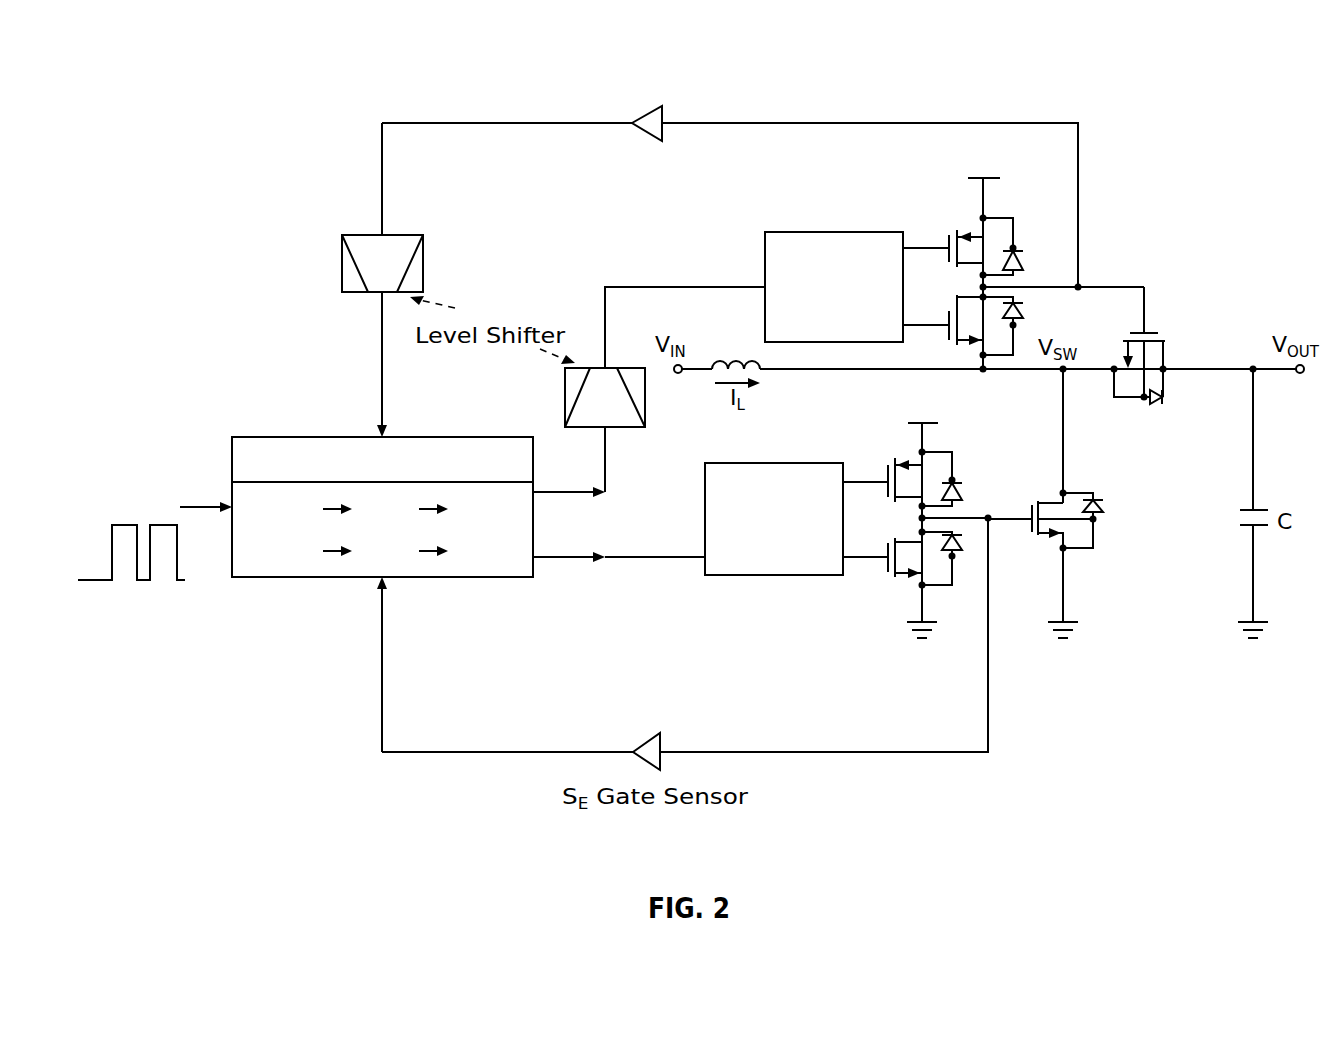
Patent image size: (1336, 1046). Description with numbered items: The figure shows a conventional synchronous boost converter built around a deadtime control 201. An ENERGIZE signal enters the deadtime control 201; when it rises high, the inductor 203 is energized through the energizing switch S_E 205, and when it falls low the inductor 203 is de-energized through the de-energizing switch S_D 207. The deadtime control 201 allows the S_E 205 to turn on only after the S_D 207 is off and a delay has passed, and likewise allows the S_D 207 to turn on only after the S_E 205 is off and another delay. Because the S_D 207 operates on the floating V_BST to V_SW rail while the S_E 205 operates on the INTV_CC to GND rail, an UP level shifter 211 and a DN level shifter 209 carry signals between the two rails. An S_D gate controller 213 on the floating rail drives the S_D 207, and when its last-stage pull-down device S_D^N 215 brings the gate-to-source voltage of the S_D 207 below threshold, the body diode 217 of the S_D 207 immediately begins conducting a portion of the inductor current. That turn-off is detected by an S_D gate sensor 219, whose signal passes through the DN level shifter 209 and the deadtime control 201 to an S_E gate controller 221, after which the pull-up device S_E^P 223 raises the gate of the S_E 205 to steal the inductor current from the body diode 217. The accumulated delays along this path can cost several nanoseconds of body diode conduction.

The deadtime control 201 is at (263, 437).
The inductor 203 is at (735, 359).
The energizing switch S_E 205 is at (1048, 503).
The de-energizing switch S_D 207 is at (1143, 333).
The DN level shifter 209 is at (360, 235).
The UP level shifter 211 is at (565, 415).
The S_D gate controller 213 is at (804, 231).
The pull down device S_D^N 215 is at (922, 272).
The body diode 217 is at (1150, 405).
The S_D gate sensor 219 is at (648, 110).
The S_E gate controller 221 is at (727, 463).
The pull up device S_E^P 223 is at (878, 427).